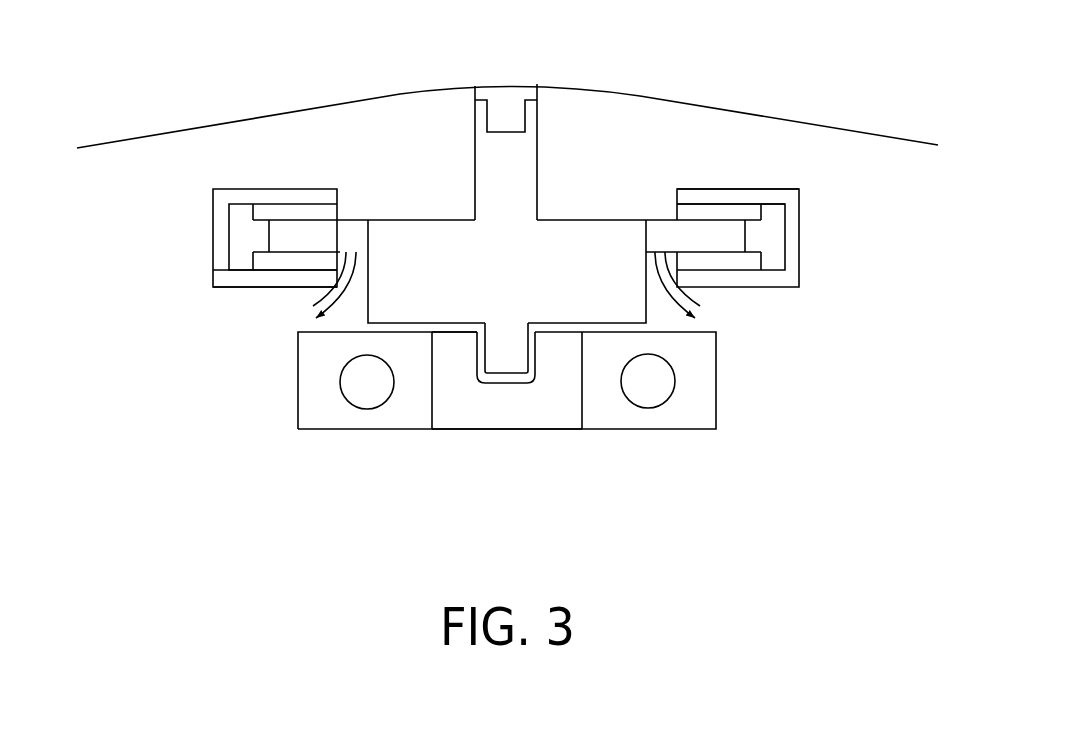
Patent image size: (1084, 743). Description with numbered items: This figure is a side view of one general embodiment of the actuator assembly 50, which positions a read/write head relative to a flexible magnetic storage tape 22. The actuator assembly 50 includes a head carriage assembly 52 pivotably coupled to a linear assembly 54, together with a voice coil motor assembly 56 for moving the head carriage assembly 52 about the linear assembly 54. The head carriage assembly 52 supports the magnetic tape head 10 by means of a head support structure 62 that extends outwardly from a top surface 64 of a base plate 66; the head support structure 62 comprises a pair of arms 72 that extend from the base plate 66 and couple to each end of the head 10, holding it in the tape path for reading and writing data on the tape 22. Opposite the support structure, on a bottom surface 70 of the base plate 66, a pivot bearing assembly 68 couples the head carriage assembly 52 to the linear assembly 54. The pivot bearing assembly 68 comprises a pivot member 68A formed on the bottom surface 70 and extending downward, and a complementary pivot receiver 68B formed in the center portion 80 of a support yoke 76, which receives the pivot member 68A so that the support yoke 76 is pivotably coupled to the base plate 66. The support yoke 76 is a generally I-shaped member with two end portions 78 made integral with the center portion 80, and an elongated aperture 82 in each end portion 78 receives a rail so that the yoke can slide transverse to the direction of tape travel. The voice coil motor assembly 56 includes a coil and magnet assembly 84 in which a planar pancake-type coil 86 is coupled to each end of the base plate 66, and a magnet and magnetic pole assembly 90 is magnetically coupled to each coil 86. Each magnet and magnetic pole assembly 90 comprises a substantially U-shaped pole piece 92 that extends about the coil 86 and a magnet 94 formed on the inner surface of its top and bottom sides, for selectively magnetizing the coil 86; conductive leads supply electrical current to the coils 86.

The magnetic tape head 10 is at (537, 93).
The storage tape 22 is at (278, 112).
The actuator assembly 50 is at (221, 374).
The head carriage assembly 52 is at (594, 194).
The linear assembly 54 is at (738, 450).
The voice coil motor assembly 56 is at (822, 201).
The head support structure 62 is at (472, 173).
The top surface 64 is at (385, 218).
The base plate 66 is at (527, 273).
The pivot bearing assembly 68 is at (468, 362).
The pivot member 68A is at (508, 370).
The pivot receiver 68B is at (537, 360).
The bottom surface 70 is at (435, 326).
The arms 72 is at (525, 168).
The support yoke 76 is at (544, 459).
The end portions 78 is at (312, 433).
The center portion 80 is at (505, 432).
The elongated aperture 82 is at (644, 396).
The coil and magnet assembly 84 is at (243, 176).
The coil 86 is at (733, 231).
The magnet and magnetic pole assembly 90 is at (278, 170).
The pole piece 92 is at (258, 283).
The magnet 94 is at (722, 207).